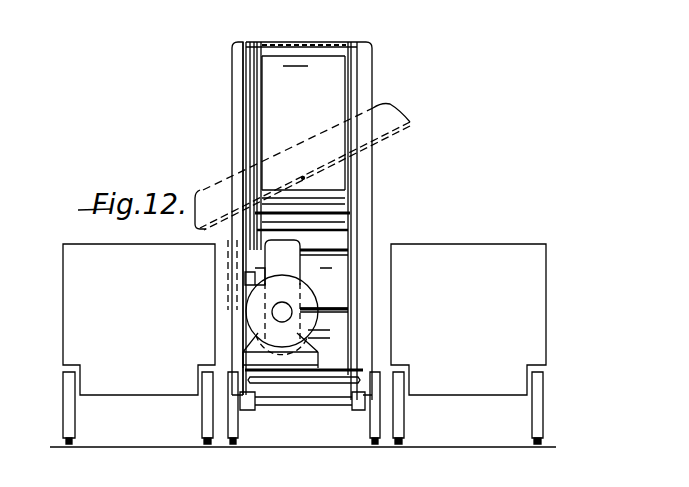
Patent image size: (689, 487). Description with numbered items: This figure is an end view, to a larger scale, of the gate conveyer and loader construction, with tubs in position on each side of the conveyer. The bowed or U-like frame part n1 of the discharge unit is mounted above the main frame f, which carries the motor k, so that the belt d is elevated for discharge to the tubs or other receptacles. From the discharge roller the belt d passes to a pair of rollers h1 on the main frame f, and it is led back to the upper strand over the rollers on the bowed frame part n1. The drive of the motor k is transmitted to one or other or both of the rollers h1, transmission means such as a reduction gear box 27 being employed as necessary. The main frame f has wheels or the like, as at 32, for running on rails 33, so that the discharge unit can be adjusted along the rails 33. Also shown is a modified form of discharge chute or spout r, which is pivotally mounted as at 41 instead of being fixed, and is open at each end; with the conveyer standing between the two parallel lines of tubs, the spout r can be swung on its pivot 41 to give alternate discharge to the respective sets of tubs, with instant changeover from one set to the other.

The belt d is at (327, 80).
The bowed or U-like frame part n1 is at (250, 118).
The discharge chute or spout r is at (408, 124).
The pivot 41 is at (303, 178).
The rollers h1 is at (352, 245).
The motor k is at (312, 291).
The main frame f is at (372, 318).
The reduction gear box 27 is at (245, 261).
The wheels 32 is at (366, 418).
The rails 33 is at (375, 442).